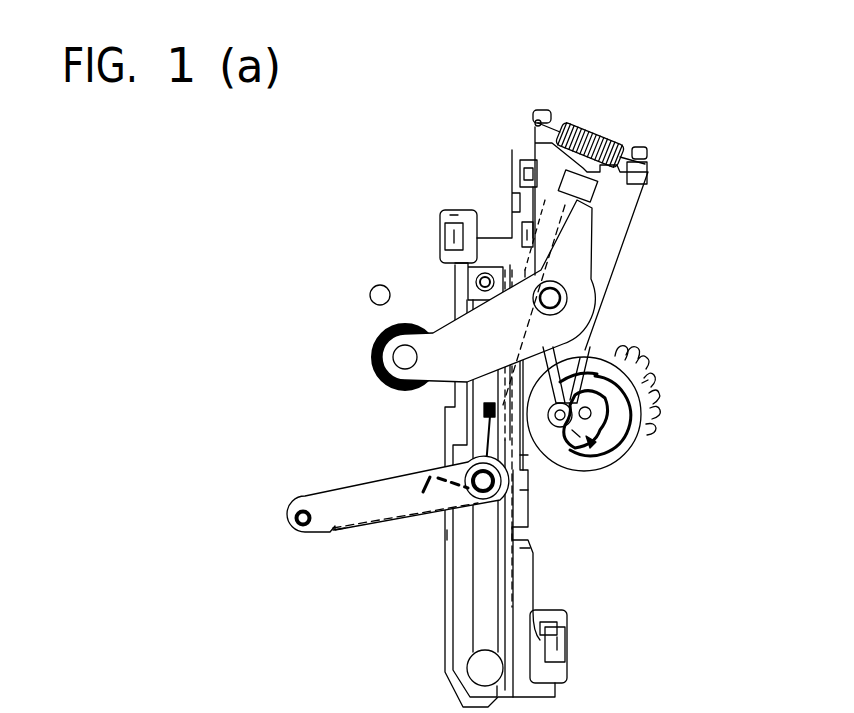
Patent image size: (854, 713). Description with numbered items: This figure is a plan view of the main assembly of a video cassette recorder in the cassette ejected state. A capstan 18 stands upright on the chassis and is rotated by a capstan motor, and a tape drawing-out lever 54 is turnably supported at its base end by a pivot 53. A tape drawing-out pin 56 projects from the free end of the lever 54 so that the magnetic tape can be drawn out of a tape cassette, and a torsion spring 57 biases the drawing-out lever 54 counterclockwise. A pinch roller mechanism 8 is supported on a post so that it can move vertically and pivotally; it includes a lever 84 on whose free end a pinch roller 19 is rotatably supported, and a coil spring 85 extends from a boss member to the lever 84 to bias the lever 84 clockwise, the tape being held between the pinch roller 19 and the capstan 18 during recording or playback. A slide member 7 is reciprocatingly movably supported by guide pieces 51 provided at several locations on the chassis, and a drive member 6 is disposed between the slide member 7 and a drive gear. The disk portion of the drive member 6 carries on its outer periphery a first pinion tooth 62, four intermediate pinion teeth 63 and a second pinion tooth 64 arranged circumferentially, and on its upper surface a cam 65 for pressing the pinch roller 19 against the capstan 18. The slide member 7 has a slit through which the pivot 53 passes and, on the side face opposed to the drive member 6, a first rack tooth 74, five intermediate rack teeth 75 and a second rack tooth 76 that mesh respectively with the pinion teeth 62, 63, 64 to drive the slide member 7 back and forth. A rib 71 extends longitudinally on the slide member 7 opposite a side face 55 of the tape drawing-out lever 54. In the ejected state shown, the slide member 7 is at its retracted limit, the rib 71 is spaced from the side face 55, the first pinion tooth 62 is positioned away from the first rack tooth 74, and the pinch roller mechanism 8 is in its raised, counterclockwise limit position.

The drive member 6 is at (590, 357).
The slide member 7 is at (450, 655).
The pinch roller mechanism 8 is at (640, 218).
The capstan 18 is at (372, 288).
The pinch roller 19 is at (372, 347).
The guide piece 51 is at (520, 165).
The pivot 53 is at (481, 488).
The tape drawing-out lever 54 is at (370, 492).
The side face 55 is at (362, 536).
The tape drawing-out pin 56 is at (287, 506).
The torsion spring 57 is at (483, 430).
The first pinion tooth 62 is at (652, 432).
The intermediate pinion teeth 63 is at (645, 385).
The second pinion tooth 64 is at (622, 350).
The cam 65 is at (592, 443).
The rib 71 is at (447, 540).
The first rack tooth 74 is at (530, 462).
The intermediate rack teeth 75 is at (530, 492).
The second rack tooth 76 is at (530, 548).
The lever 84 is at (590, 255).
The coil spring 85 is at (592, 130).